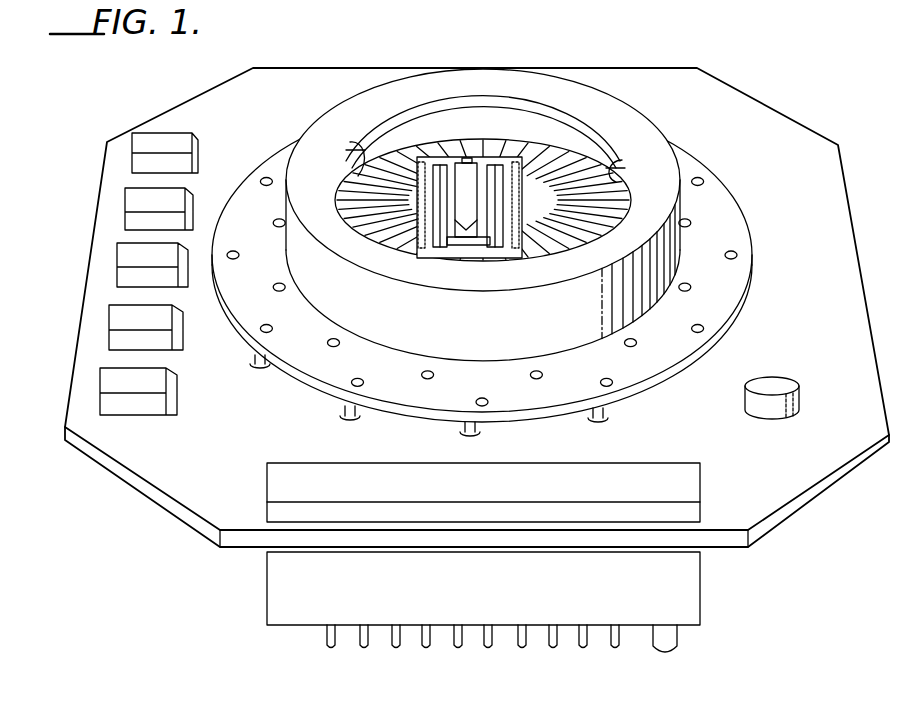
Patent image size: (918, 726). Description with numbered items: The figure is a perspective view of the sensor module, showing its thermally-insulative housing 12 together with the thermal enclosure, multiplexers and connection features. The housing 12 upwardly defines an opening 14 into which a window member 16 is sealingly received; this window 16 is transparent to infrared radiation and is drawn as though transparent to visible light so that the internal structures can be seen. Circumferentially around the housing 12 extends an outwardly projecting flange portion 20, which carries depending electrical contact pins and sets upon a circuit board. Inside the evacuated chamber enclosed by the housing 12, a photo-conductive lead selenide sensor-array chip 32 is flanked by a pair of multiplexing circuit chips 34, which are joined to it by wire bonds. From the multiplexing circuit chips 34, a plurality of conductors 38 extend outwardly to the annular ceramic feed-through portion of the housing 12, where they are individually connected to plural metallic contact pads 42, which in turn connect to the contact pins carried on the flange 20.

The thermally-insulative housing 12 is at (670, 272).
The opening 14 is at (580, 136).
The window member 16 is at (483, 112).
The flange portion 20 is at (718, 311).
The sensor-array chip 32 is at (468, 240).
The multiplexing circuit chips 34 is at (507, 160).
The conductors 38 is at (362, 213).
The contact pads 42 is at (350, 146).